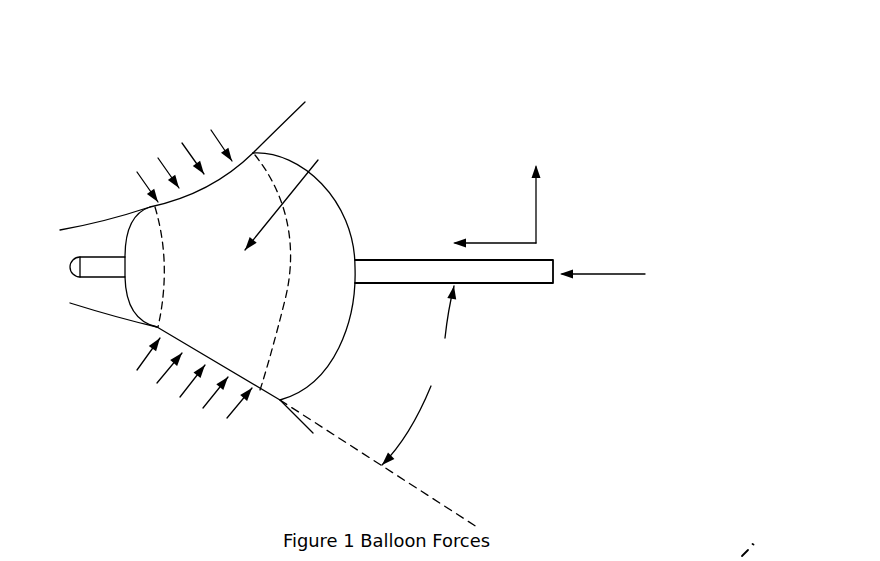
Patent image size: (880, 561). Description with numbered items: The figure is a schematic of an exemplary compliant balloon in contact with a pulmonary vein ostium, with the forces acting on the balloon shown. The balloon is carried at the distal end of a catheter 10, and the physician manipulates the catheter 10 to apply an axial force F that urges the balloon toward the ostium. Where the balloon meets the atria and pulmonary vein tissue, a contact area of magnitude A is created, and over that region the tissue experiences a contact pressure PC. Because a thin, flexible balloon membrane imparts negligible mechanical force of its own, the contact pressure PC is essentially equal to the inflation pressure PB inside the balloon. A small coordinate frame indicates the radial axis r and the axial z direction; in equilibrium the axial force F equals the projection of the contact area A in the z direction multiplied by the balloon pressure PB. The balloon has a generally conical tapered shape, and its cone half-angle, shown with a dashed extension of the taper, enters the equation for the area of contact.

The catheter 10 is at (288, 155).
The contact pressure PC is at (190, 274).
The balloon pressure PB is at (382, 303).
The contact area A is at (318, 160).
The axial force F is at (602, 246).
The radial axis r is at (536, 189).
The z direction z is at (486, 247).